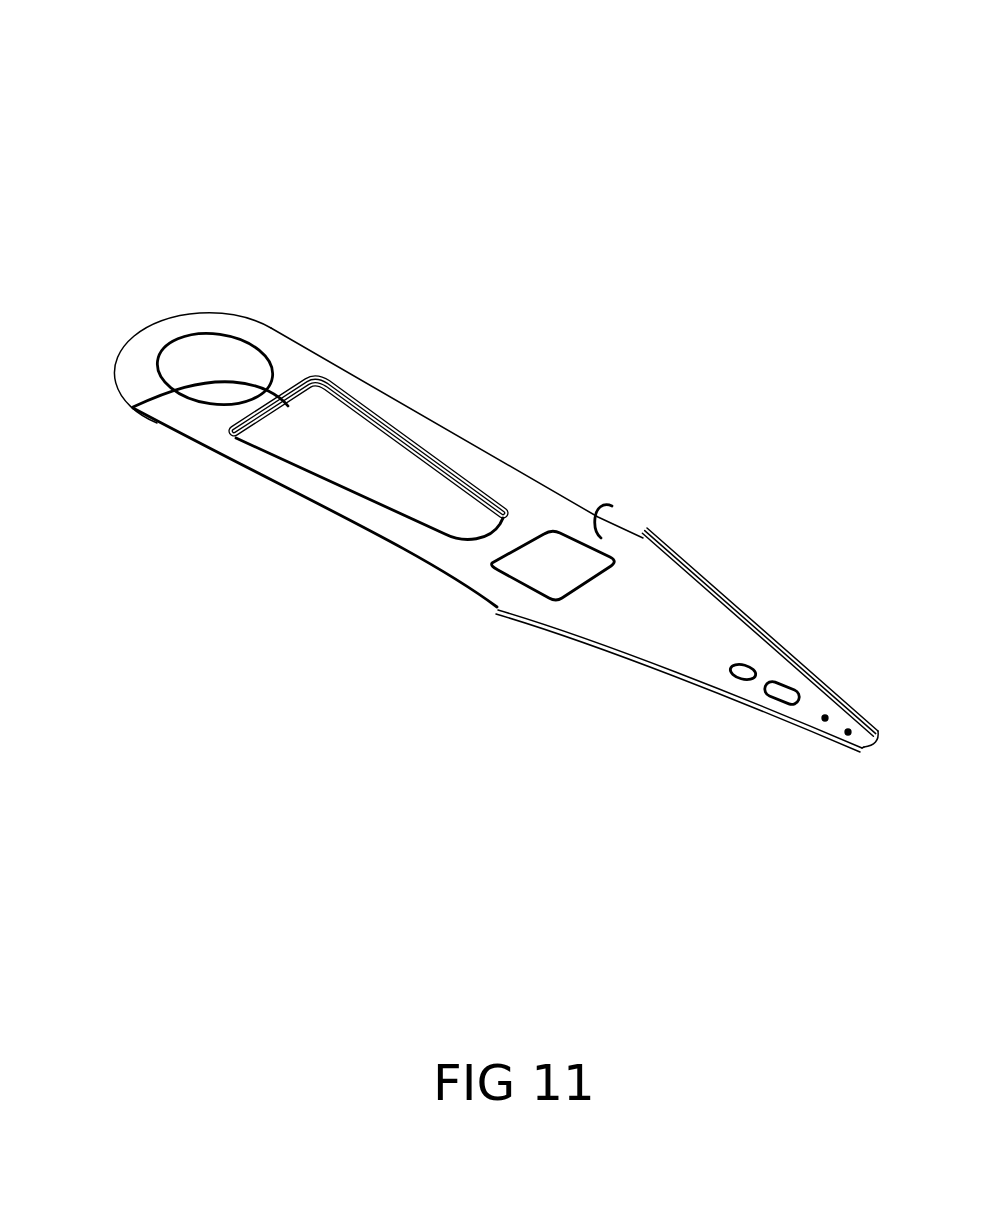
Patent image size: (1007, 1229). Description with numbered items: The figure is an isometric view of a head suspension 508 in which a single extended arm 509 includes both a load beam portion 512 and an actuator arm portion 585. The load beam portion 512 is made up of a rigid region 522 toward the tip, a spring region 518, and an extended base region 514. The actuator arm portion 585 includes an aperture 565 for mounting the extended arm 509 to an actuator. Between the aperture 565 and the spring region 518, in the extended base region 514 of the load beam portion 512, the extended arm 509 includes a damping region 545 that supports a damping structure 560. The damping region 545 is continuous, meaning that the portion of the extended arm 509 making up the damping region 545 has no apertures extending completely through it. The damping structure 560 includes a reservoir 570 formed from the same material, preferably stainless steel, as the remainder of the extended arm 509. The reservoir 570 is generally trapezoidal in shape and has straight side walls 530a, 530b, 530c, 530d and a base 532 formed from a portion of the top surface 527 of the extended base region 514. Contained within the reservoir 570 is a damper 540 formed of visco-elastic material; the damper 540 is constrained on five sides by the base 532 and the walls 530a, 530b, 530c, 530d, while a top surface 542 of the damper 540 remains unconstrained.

The head suspension 508 is at (418, 145).
The extended arm 509 is at (280, 504).
The load beam portion 512 is at (777, 722).
The extended base region 514 is at (483, 452).
The spring region 518 is at (498, 609).
The rigid region 522 is at (746, 612).
The top surface 527 is at (612, 506).
The side wall 530a is at (420, 530).
The side wall 530b is at (290, 372).
The side wall 530c is at (437, 453).
The side wall 530d is at (493, 540).
The base 532 is at (396, 486).
The damper 540 is at (345, 497).
The top surface 542 is at (134, 407).
The damping region 545 is at (500, 494).
The damping structure 560 is at (400, 430).
The aperture 565 is at (165, 355).
The reservoir 570 is at (287, 402).
The actuator arm portion 585 is at (250, 316).